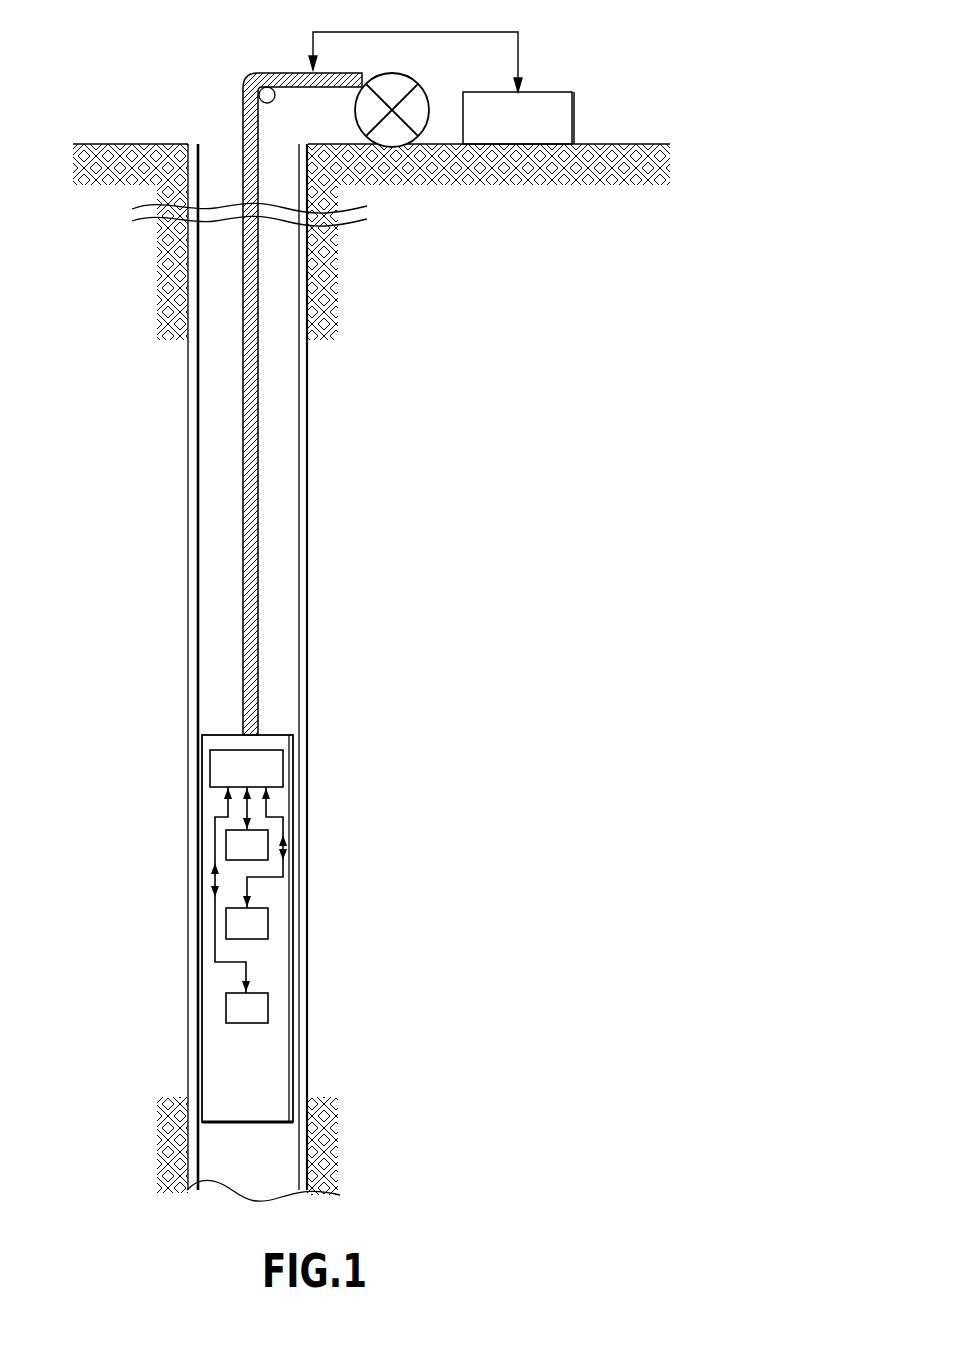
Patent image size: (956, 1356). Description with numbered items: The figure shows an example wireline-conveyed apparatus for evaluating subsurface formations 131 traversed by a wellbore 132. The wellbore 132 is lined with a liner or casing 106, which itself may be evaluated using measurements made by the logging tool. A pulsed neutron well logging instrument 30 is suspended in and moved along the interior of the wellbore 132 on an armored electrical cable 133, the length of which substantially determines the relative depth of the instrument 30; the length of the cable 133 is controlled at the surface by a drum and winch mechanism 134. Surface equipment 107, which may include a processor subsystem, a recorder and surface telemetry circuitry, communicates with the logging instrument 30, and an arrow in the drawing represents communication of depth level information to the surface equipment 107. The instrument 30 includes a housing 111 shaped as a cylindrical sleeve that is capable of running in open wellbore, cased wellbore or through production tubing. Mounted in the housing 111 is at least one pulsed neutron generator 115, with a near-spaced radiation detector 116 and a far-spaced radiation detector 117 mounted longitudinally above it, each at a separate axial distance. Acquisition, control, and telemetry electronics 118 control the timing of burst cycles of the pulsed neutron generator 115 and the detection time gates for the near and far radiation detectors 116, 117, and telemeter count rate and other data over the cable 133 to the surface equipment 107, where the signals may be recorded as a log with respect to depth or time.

The pulsed neutron well logging instrument 30 is at (247, 887).
The casing 106 is at (190, 538).
The surface equipment 107 is at (550, 118).
The housing 111 is at (202, 1030).
The pulsed neutron generator 115 is at (258, 1008).
The near-spaced radiation detector 116 is at (258, 922).
The far-spaced radiation detector 117 is at (237, 850).
The acquisition, control, and telemetry electronics 118 is at (270, 772).
The subsurface formations 131 is at (108, 143).
The wellbore 132 is at (225, 172).
The armored electrical cable 133 is at (250, 90).
The drum and winch mechanism 134 is at (408, 72).